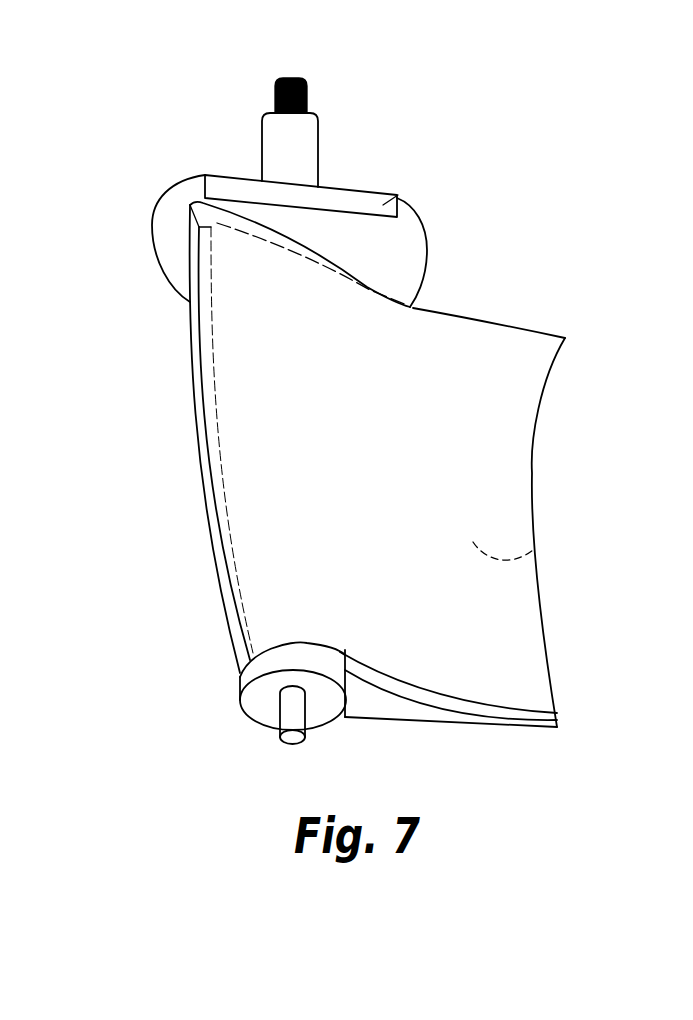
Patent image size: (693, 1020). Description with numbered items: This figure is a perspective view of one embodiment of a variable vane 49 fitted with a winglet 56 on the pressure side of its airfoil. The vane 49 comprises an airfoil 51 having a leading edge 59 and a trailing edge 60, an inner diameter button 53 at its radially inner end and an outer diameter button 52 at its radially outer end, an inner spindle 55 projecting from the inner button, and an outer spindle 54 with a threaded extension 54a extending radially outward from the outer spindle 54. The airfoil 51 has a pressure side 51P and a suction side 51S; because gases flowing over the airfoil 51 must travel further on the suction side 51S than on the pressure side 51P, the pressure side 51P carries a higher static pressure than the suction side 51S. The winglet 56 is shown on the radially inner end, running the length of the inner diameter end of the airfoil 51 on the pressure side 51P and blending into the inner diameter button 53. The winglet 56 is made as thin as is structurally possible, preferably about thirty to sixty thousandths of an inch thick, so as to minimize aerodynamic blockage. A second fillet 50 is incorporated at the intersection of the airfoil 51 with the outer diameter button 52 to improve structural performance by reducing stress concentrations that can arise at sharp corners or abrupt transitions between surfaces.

The variable vane 49 is at (555, 132).
The second fillet 50 is at (420, 308).
The airfoil 51 is at (270, 453).
The suction side 51S is at (533, 550).
The pressure side 51P is at (482, 642).
The outer diameter button 52 is at (398, 195).
The inner diameter button 53 is at (240, 680).
The outer spindle 54 is at (320, 148).
The threaded extension 54a is at (307, 98).
The inner spindle 55 is at (287, 740).
The winglet 56 is at (377, 707).
The leading edge 59 is at (215, 543).
The trailing edge 60 is at (537, 422).